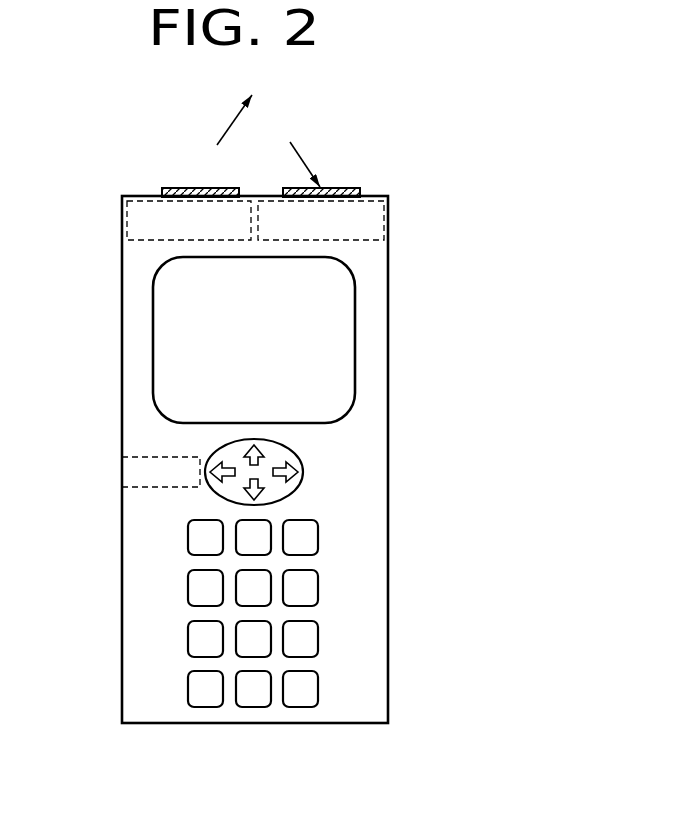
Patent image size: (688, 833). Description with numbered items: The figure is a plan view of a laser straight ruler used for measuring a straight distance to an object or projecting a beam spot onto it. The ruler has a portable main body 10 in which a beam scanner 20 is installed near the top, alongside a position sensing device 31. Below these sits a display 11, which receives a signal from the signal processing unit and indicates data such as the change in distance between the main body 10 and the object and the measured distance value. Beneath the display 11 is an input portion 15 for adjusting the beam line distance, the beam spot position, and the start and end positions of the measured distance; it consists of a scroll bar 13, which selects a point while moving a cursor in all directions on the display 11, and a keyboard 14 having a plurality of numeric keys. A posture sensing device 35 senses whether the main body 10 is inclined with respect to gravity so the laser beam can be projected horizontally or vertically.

The main body 10 is at (389, 460).
The display 11 is at (356, 365).
The scroll bar 13 is at (297, 490).
The keyboard 14 is at (343, 528).
The input portion 15 is at (358, 573).
The beam scanner 20 is at (144, 222).
The position sensing device 31 is at (372, 217).
The posture sensing device 35 is at (122, 471).